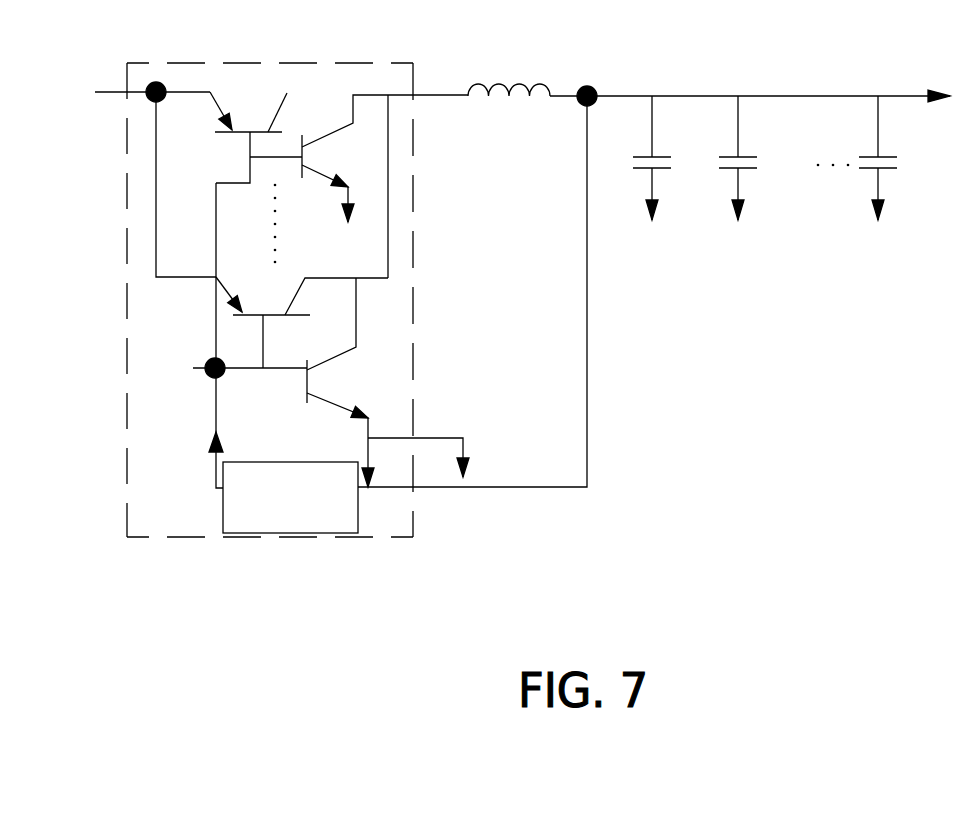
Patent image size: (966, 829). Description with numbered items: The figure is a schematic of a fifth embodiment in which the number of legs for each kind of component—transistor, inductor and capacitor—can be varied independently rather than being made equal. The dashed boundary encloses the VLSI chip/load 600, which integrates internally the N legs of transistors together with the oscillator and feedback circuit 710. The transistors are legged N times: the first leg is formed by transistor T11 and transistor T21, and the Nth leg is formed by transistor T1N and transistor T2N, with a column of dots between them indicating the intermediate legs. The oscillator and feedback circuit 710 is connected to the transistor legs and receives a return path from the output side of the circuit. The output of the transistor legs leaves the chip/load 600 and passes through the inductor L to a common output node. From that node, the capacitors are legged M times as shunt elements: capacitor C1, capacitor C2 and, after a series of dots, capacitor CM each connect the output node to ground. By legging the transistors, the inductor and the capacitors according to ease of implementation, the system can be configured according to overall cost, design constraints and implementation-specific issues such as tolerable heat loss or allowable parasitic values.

The chip/load 600 is at (413, 70).
The oscillator and feedback circuit 710 is at (223, 518).
The transistor T11 is at (256, 133).
The transistor T21 is at (385, 158).
The transistor T1N is at (302, 322).
The transistor T2N is at (388, 382).
The inductor L is at (509, 106).
The capacitor C1 is at (674, 158).
The capacitor C2 is at (761, 158).
The capacitor CM is at (902, 158).